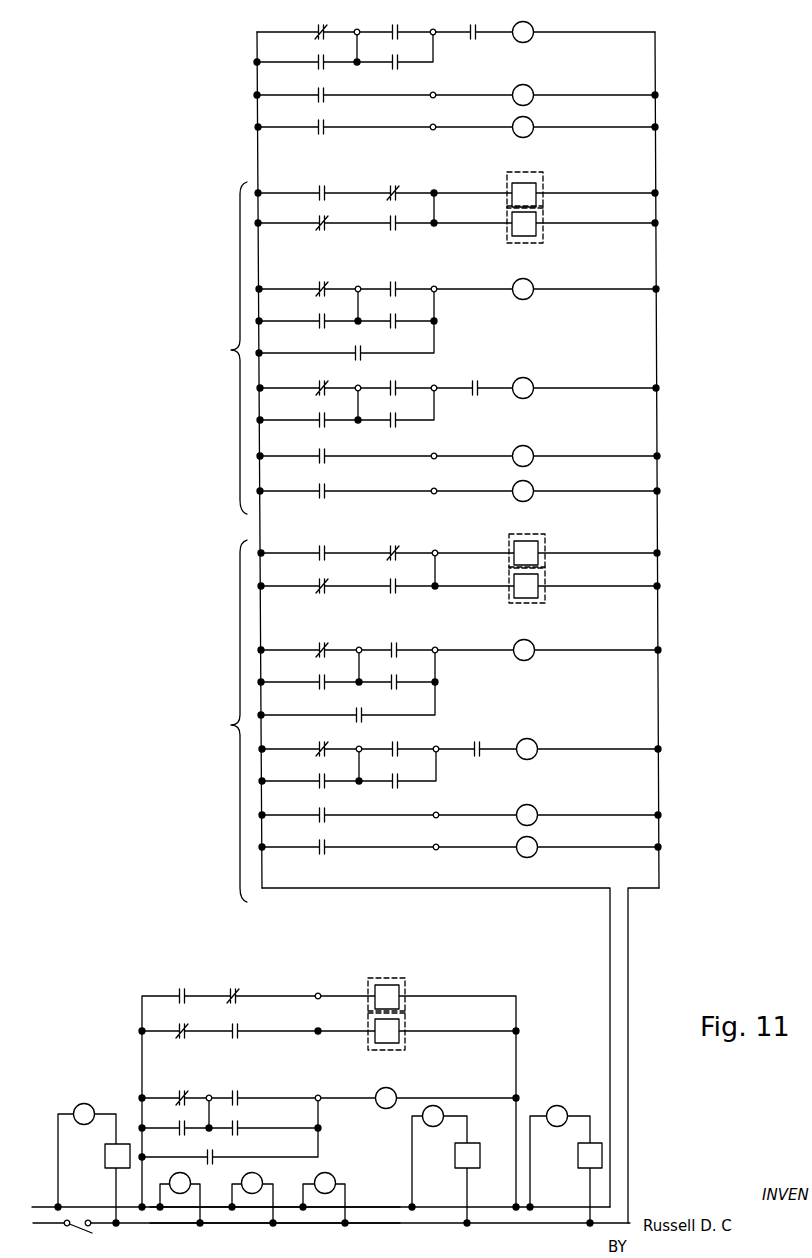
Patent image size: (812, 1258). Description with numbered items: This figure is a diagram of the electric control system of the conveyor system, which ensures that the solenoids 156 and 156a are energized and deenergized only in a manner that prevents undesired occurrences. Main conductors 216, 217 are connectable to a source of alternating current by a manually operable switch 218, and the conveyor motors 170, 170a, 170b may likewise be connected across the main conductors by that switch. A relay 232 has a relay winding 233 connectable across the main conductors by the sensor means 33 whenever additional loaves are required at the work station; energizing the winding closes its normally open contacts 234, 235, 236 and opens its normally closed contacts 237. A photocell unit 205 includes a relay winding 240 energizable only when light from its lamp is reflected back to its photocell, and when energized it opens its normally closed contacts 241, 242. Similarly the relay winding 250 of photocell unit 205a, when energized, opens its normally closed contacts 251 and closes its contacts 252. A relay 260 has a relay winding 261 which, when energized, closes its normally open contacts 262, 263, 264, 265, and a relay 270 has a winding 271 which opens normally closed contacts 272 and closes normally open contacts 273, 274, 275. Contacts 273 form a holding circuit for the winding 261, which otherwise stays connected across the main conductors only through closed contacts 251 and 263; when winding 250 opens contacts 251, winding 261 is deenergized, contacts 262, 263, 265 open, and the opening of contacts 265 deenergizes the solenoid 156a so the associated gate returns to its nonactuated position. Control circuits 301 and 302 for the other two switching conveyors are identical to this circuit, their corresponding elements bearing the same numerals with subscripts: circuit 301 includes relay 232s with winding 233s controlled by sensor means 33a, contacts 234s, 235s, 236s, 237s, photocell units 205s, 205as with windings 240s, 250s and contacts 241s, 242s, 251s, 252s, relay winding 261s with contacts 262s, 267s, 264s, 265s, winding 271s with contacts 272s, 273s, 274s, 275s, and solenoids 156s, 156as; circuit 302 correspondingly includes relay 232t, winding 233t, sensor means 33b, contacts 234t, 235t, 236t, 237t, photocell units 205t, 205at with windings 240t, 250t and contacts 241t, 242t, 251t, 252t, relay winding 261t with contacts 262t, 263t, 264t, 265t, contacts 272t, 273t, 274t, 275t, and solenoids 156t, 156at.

The normally closed set of contacts 241 is at (318, 27).
The normally closed set of contacts 242 is at (392, 27).
The normally open set of contacts 264 is at (470, 27).
The relay 270 is at (543, 27).
The relay winding 271 is at (533, 40).
The normally open set of contacts 236 is at (318, 66).
The normally open set of contacts 274 is at (399, 66).
The normally open set of contacts 265 is at (325, 99).
The solenoid 156a is at (533, 90).
The normally open set of contacts 275 is at (318, 131).
The solenoid 156 is at (533, 122).
The control circuit 301 is at (219, 348).
The normally open set of contacts 234s is at (320, 189).
The normally closed set of contacts 272s is at (391, 189).
The relay winding 250s is at (512, 191).
The photocell unit 205as is at (545, 180).
The normally closed set of contacts 237s is at (318, 227).
The normally open set of contacts 262s is at (397, 227).
The relay winding 240s is at (512, 222).
The photocell unit 205s is at (545, 240).
The normally closed set of contacts 251s is at (320, 286).
The set of contacts 252s is at (397, 285).
The relay winding 261s is at (532, 297).
The normally open set of contacts 235s is at (318, 326).
The normally open set of contacts 267s is at (396, 326).
The normally open set of contacts 273s is at (363, 356).
The normally closed set of contacts 241s is at (320, 385).
The normally closed set of contacts 242s is at (397, 391).
The normally open set of contacts 264s is at (473, 384).
The relay winding 271s is at (532, 396).
The normally open set of contacts 236s is at (318, 424).
The normally open set of contacts 274s is at (397, 425).
The normally open set of contacts 265s is at (326, 460).
The solenoid 156as is at (532, 449).
The normally open set of contacts 275s is at (326, 495).
The solenoid 156s is at (532, 485).
The control circuit 302 is at (219, 721).
The normally open set of contacts 234t is at (320, 549).
The normally closed set of contacts 272t is at (391, 549).
The relay winding 250t is at (514, 550).
The photocell unit 205at is at (547, 540).
The normally closed set of contacts 237t is at (320, 583).
The normally open set of contacts 262t is at (395, 591).
The relay winding 240t is at (514, 585).
The photocell unit 205t is at (547, 602).
The normally closed set of contacts 251t is at (320, 647).
The set of contacts 252t is at (398, 646).
The relay winding 261t is at (533, 658).
The normally open set of contacts 235t is at (320, 679).
The normally open set of contacts 263t is at (400, 678).
The normally open set of contacts 273t is at (365, 718).
The normally closed set of contacts 241t is at (320, 746).
The normally closed set of contacts 242t is at (398, 753).
The normally open set of contacts 264t is at (480, 754).
The normally open set of contacts 236t is at (318, 786).
The normally open set of contacts 274t is at (398, 786).
The normally open set of contacts 265t is at (326, 819).
The solenoid 156at is at (536, 808).
The normally open set of contacts 275t is at (326, 851).
The solenoid 156t is at (536, 841).
The normally open set of contacts 234 is at (180, 993).
The normally closed set of contacts 272 is at (231, 993).
The relay winding 250 is at (375, 994).
The photocell unit 205a is at (405, 980).
The normally closed set of contacts 237 is at (186, 1036).
The normally open set of contacts 262 is at (239, 1036).
The relay winding 240 is at (375, 1030).
The photocell unit 205 is at (405, 1047).
The normally closed set of contacts 251 is at (180, 1095).
The set of contacts 252 is at (239, 1095).
The relay winding 261 is at (393, 1090).
The relay 260 is at (378, 1118).
The normally open set of contacts 235 is at (178, 1132).
The normally open set of contacts 263 is at (239, 1133).
The normally open set of contacts 273 is at (214, 1160).
The relay 232 is at (54, 1099).
The relay winding 233 is at (88, 1103).
The sensor means 33 is at (105, 1150).
The motor 170 is at (176, 1176).
The motor 170a is at (260, 1176).
The motor 170b is at (333, 1176).
The relay 232s is at (481, 1128).
The relay winding 233s is at (440, 1125).
The sensor means 33a is at (455, 1158).
The relay 232t is at (582, 1108).
The relay winding 233t is at (549, 1125).
The sensor means 33b is at (578, 1158).
The manually operable switch 218 is at (72, 1233).
The main conductor 216 is at (362, 1209).
The main conductor 217 is at (404, 1226).